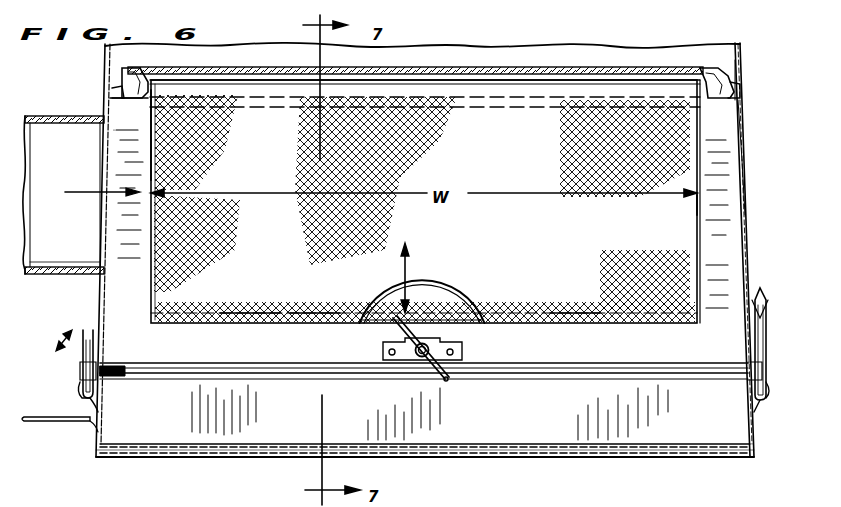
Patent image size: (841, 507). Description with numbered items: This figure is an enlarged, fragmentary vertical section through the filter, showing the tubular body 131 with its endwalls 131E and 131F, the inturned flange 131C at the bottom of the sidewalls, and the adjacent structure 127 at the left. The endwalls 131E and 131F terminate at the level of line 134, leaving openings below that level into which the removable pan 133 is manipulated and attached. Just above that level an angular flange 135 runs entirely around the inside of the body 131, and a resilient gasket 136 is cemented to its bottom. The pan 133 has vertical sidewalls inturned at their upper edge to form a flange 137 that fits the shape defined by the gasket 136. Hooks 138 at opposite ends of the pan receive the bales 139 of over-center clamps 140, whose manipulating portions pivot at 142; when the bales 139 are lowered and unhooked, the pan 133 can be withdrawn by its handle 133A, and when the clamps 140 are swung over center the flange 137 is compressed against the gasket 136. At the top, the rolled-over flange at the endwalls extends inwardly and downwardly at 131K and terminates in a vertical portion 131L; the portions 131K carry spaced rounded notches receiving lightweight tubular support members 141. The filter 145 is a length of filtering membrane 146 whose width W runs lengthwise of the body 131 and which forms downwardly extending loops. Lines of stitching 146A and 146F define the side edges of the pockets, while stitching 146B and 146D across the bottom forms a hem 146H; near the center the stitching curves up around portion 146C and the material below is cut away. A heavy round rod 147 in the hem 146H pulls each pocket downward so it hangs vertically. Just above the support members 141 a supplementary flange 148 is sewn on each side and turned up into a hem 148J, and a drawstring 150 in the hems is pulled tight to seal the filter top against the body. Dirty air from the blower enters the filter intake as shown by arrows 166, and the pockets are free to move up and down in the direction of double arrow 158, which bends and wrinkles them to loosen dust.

The adjacent cabinet wall 127 is at (103, 160).
The tubular body 131 is at (748, 243).
The inturned flange 131C is at (92, 462).
The endwall 131E is at (97, 244).
The endwall 131F is at (774, 188).
The inwardly and downwardly extended flange portion 131K is at (722, 84).
The vertical portion 131L is at (710, 108).
The removable pan 133 is at (141, 438).
The handle 133A is at (84, 428).
The line 134 is at (83, 369).
The angular flange 135 is at (110, 367).
The resilient gasket 136 is at (133, 370).
The flange 137 is at (106, 379).
The hook 138 is at (98, 406).
The bale 139 is at (80, 380).
The clamp 140 is at (74, 328).
The tubular support member 141 is at (230, 82).
The pivot 142 is at (45, 340).
The filter 145 is at (462, 100).
The filtering membrane 146 is at (504, 153).
The line of stitching 146A is at (158, 170).
The line of stitching 146B is at (247, 311).
The curved stitching portion 146C is at (440, 282).
The line of stitching 146D is at (573, 303).
The line of stitching 146F is at (697, 204).
The hem 146H is at (312, 311).
The round rod 147 is at (458, 310).
The supplementary flange 148 is at (128, 80).
The hem 148J is at (122, 92).
The drawstring 150 is at (122, 96).
The double arrow 158 is at (420, 266).
The arrows 166 is at (90, 190).